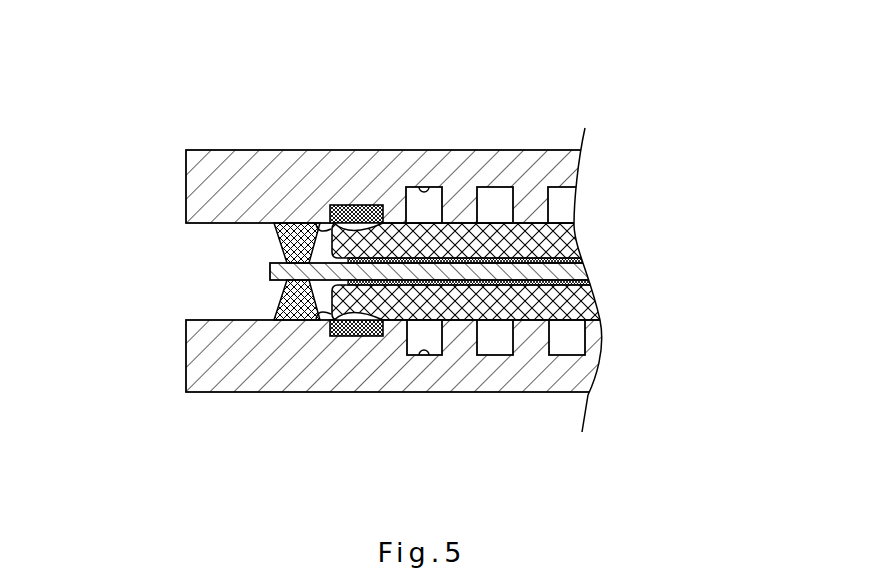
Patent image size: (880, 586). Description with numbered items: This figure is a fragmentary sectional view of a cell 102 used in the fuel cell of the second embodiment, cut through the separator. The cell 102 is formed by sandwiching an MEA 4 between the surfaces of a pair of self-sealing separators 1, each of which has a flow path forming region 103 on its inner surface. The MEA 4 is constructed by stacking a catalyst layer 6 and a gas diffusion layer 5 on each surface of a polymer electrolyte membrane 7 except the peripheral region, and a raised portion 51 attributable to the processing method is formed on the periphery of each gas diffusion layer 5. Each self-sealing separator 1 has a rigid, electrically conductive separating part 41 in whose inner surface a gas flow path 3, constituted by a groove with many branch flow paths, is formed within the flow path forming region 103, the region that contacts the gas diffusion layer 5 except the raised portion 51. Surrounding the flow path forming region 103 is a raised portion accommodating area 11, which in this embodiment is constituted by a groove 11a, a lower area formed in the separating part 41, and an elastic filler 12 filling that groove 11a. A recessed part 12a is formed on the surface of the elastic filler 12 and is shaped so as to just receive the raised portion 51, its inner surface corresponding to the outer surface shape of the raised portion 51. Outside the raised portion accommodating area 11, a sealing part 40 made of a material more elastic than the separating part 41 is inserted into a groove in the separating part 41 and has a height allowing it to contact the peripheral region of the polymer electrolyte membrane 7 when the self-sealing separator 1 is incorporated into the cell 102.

The self-sealing separator 1 is at (423, 268).
The gas flow path 3 is at (421, 189).
The MEA 4 is at (529, 229).
The gas diffusion layer 5 is at (529, 227).
The catalyst layer 6 is at (583, 259).
The polymer electrolyte membrane 7 is at (269, 271).
The raised portion accommodating area 11 is at (349, 247).
The groove 11a is at (348, 212).
The elastic filler 12 is at (377, 269).
The recessed part 12a is at (381, 222).
The sealing part 40 is at (281, 242).
The separating part 41 is at (585, 163).
The raised portion 51 is at (322, 226).
The cell 102 is at (401, 257).
The flow path forming region 103 is at (463, 227).